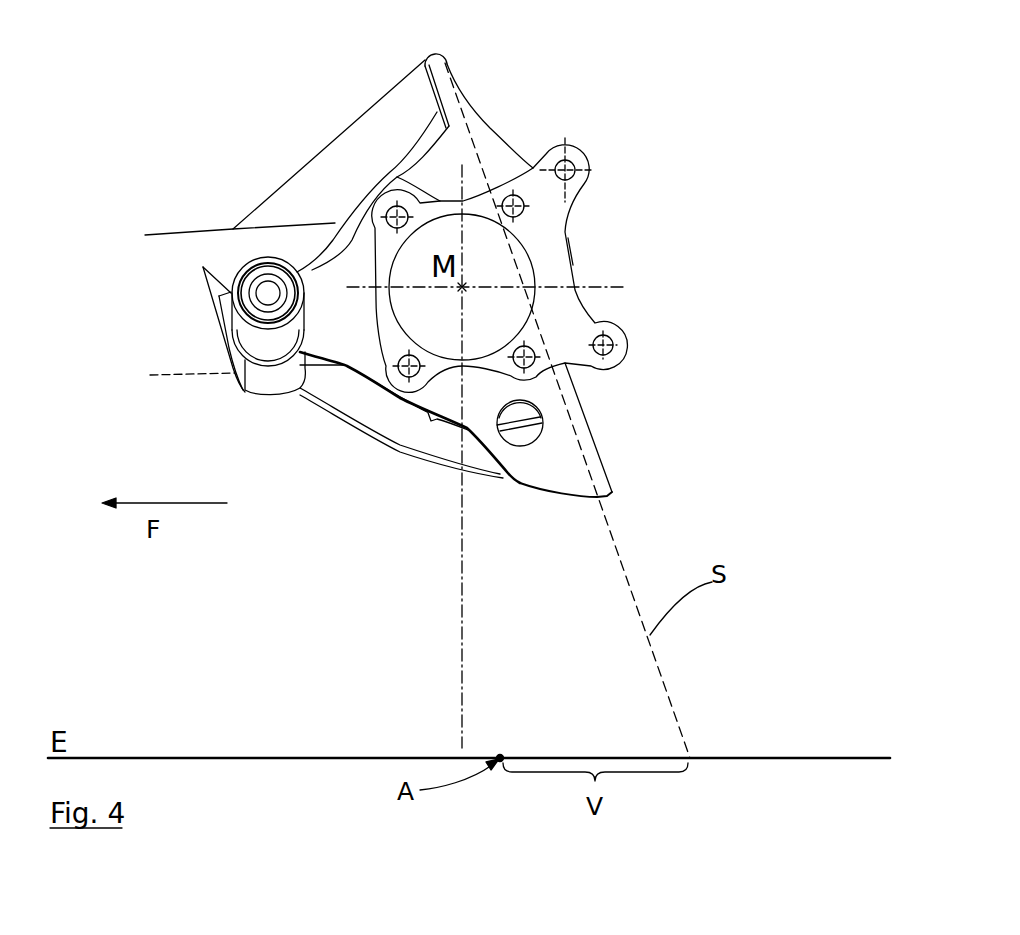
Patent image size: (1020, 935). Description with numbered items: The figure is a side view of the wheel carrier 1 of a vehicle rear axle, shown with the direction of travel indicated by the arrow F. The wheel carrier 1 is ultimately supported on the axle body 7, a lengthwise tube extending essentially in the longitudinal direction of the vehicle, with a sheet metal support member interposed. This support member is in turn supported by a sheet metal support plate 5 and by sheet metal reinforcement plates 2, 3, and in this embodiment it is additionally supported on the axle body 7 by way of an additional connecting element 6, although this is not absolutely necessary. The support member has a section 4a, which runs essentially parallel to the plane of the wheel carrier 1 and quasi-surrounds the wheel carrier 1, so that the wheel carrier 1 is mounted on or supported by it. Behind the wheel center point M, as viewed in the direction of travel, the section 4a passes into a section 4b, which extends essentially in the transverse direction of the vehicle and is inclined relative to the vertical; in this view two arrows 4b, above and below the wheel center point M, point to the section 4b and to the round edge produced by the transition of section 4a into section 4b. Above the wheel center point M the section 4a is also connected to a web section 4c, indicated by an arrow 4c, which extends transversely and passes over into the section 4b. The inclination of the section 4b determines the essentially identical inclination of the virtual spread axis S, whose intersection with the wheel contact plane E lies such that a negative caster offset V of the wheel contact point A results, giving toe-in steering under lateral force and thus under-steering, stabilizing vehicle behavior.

The wheel carrier 1 is at (490, 294).
The reinforcement plate 2 is at (407, 110).
The reinforcement plate 3 is at (355, 418).
The section 4a is at (552, 473).
The section 4b is at (486, 110).
The web section 4c is at (432, 51).
The support plate 5 is at (407, 147).
The connecting element 6 is at (245, 393).
The axle body 7 is at (186, 343).